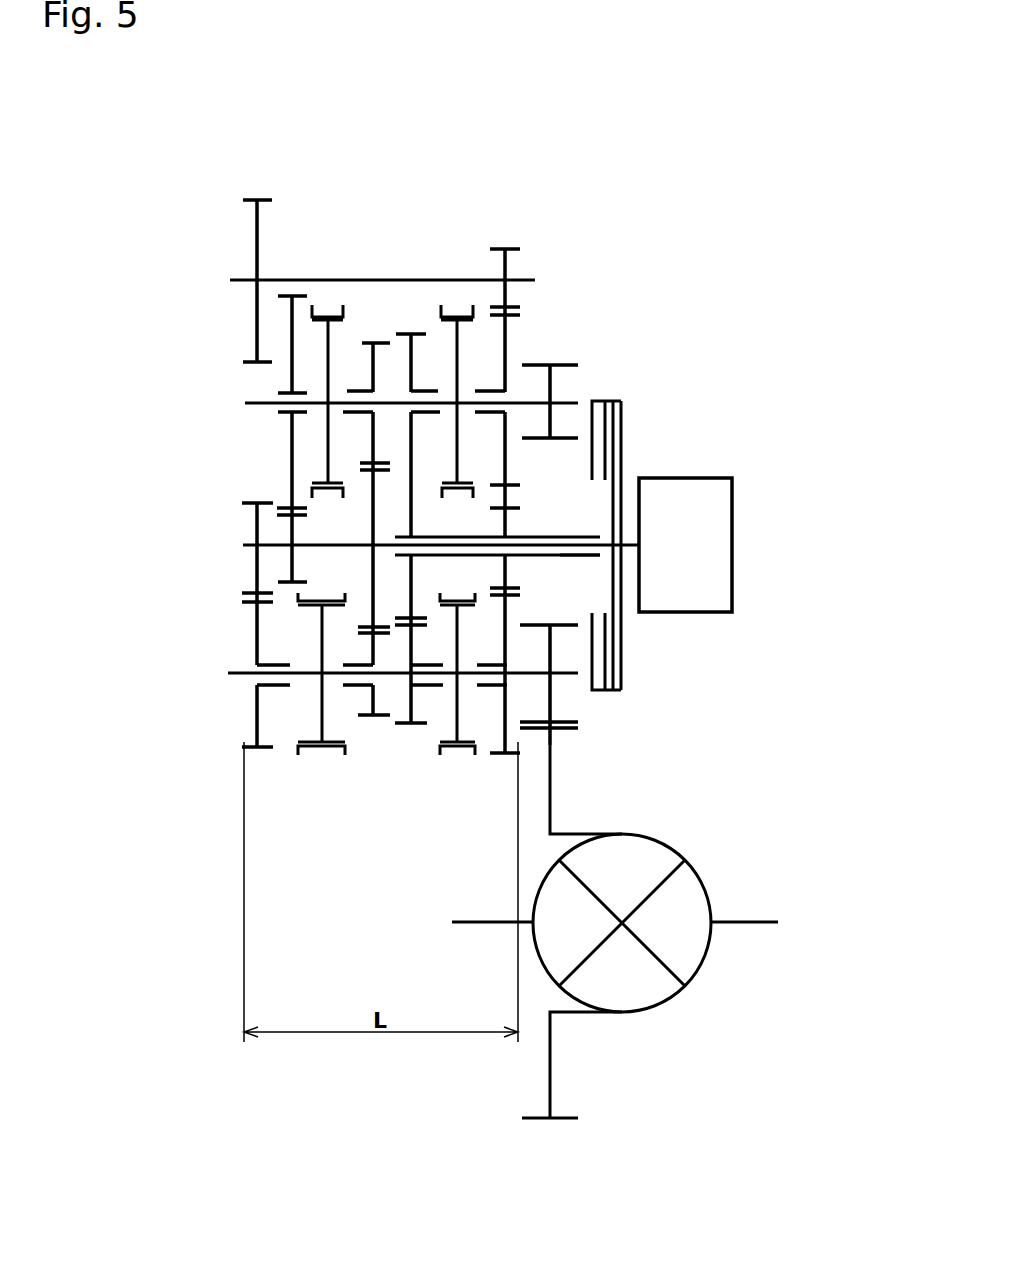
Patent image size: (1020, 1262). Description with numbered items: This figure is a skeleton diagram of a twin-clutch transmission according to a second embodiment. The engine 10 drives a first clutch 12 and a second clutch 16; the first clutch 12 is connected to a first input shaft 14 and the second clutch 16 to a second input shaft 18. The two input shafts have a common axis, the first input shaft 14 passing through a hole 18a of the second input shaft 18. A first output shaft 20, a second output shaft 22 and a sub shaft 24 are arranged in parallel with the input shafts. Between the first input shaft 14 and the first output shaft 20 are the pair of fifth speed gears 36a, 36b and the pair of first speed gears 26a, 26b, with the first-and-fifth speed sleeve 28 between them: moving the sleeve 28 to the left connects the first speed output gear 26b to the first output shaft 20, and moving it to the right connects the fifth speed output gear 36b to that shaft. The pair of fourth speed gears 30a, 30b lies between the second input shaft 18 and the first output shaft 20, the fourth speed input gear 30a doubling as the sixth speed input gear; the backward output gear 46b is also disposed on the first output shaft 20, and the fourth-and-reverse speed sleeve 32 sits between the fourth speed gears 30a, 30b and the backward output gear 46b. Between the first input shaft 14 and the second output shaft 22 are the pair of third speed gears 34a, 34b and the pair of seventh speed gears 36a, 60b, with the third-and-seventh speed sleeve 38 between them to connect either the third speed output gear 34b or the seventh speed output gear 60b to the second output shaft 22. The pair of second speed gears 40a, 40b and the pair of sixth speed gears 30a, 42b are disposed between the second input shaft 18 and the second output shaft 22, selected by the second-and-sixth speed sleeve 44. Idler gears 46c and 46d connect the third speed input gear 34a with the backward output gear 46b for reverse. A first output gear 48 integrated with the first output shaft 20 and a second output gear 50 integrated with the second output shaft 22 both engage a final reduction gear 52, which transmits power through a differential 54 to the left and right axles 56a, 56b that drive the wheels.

The engine 10 is at (663, 477).
The first clutch 12 is at (618, 398).
The first input shaft 14 is at (243, 546).
The second clutch 16 is at (595, 398).
The second input shaft 18 is at (552, 557).
The hole 18a is at (593, 553).
The first output shaft 20 is at (257, 402).
The second output shaft 22 is at (245, 680).
The sub shaft 24 is at (443, 278).
The first speed input gear 26a is at (290, 562).
The first speed output gear 26b is at (290, 327).
The 1-5 speed sleeve 28 is at (323, 308).
The fourth speed input gear 30a is at (412, 512).
The fourth speed output gear 30b is at (413, 358).
The 4-R speed sleeve 32 is at (455, 315).
The third speed input gear 34a is at (255, 577).
The third speed output gear 34b is at (247, 722).
The fifth speed input gear 36a is at (373, 610).
The fifth speed output gear 36b is at (368, 358).
The 3-7 speed sleeve 38 is at (320, 757).
The second speed input gear 40a is at (505, 522).
The second speed output gear 40b is at (505, 735).
The sixth speed output gear 42b is at (410, 703).
The 2-6 speed sleeve 44 is at (457, 753).
The backward output gear 46b is at (505, 335).
The idler gear 46c is at (255, 230).
The idler gear 46d is at (505, 263).
The first output gear 48 is at (552, 366).
The second output gear 50 is at (553, 705).
The final reduction gear 52 is at (553, 762).
The differential 54 is at (637, 850).
The left axle 56a is at (477, 922).
The right axle 56b is at (738, 919).
The seventh speed output gear 60b is at (375, 693).